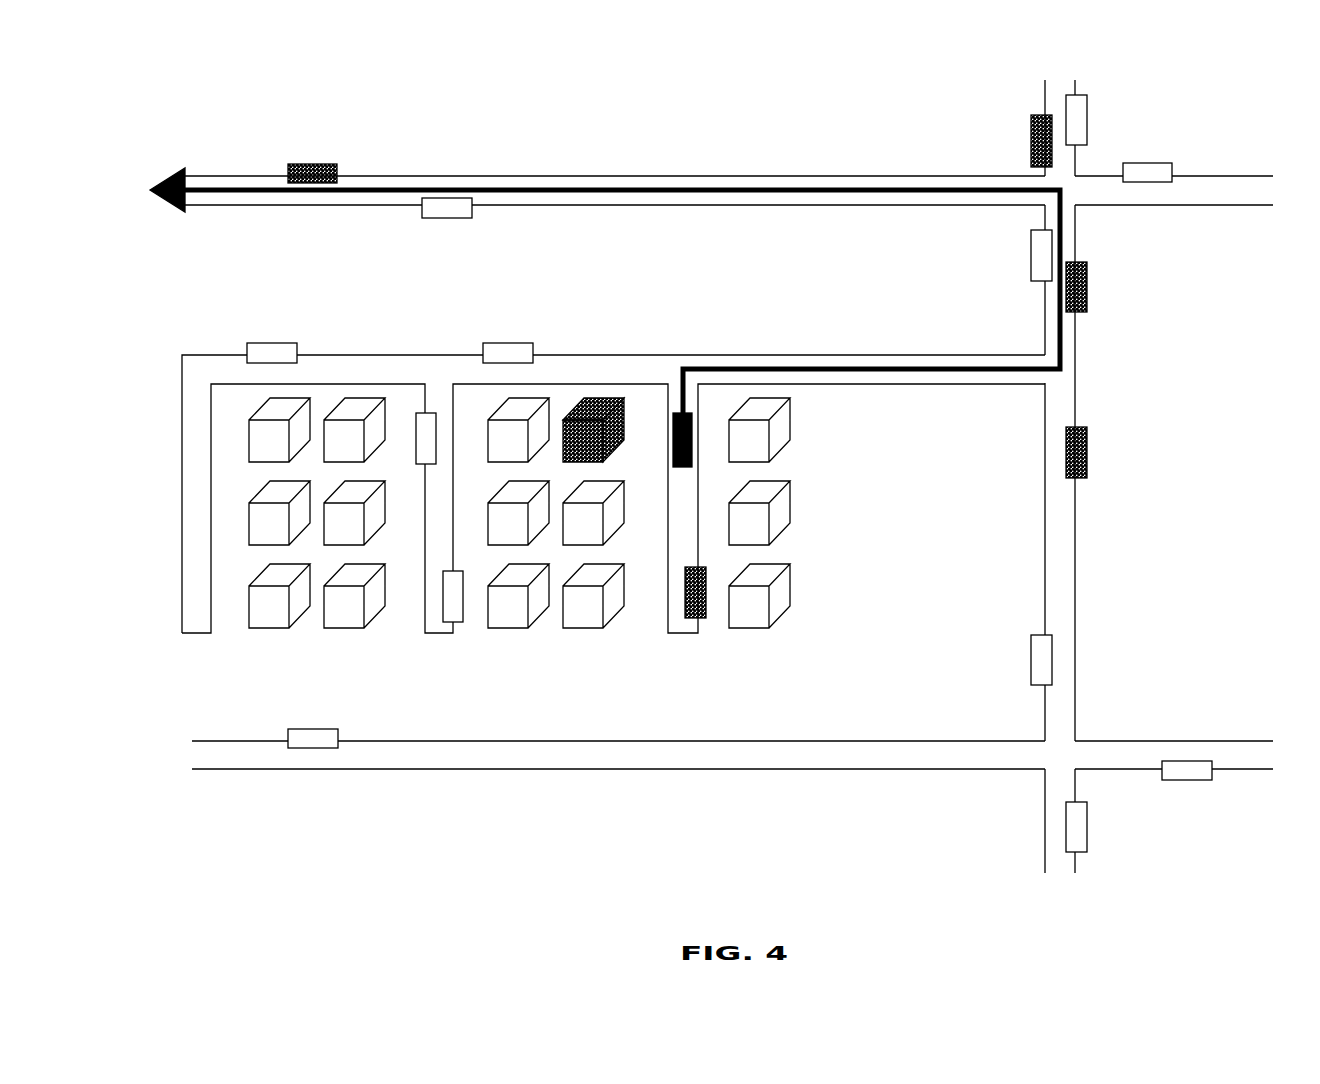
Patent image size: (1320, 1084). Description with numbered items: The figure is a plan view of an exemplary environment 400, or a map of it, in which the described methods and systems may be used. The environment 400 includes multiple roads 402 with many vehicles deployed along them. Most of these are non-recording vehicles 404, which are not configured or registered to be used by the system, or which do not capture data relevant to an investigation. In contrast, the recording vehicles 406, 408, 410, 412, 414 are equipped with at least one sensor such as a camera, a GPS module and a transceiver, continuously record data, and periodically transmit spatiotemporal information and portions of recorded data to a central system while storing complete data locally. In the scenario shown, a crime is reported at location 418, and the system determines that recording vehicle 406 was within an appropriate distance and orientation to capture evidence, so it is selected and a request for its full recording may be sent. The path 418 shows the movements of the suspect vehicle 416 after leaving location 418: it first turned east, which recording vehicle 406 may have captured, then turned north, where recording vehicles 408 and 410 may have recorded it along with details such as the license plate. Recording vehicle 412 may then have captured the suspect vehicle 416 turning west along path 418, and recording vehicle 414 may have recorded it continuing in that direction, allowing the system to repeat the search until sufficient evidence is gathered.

The environment 400 is at (163, 93).
The roads 402 is at (1230, 176).
The non-recording vehicles 404 is at (445, 219).
The recording vehicle 406 is at (698, 619).
The recording vehicle 408 is at (1088, 452).
The recording vehicle 410 is at (1088, 285).
The recording vehicle 412 is at (1030, 131).
The recording vehicle 414 is at (308, 163).
The suspect vehicle 416 is at (688, 412).
The location / path 418 is at (193, 181).